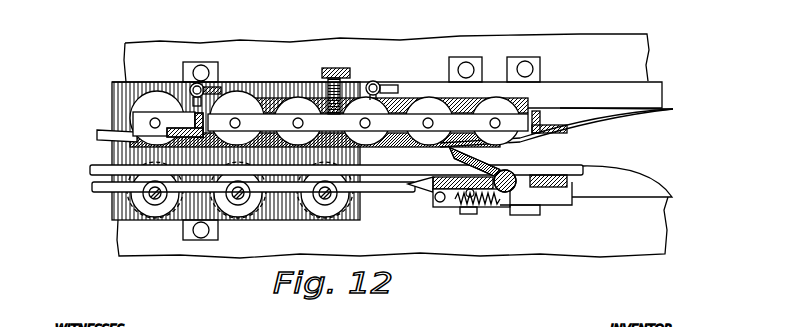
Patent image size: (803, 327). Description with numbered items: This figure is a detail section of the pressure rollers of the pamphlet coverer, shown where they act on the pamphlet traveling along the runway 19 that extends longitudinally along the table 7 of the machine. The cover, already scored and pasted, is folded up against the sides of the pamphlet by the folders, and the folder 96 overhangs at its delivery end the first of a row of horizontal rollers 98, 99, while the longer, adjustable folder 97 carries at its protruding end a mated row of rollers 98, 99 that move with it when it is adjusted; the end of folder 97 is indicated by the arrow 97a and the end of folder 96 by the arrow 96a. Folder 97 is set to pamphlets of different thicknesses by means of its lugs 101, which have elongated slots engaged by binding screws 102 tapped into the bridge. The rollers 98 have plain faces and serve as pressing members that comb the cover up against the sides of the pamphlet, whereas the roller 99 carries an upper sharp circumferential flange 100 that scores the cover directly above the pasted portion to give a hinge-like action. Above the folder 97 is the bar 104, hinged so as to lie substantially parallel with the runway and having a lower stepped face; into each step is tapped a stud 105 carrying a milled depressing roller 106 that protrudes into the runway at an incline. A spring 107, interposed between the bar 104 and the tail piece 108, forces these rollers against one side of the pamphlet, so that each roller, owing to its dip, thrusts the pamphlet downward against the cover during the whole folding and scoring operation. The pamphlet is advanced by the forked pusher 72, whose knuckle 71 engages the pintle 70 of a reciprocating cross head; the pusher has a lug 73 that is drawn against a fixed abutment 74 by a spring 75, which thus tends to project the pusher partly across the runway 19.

The table 7 is at (608, 243).
The runway 19 is at (570, 152).
The pintle 70 is at (505, 189).
The knuckle 71 is at (517, 188).
The pusher 72 is at (438, 181).
The lug 73 is at (497, 206).
The fixed abutment 74 is at (478, 211).
The spring 75 is at (450, 204).
The folder 96 is at (627, 187).
The arrow 96a is at (328, 200).
The folder 97 is at (620, 97).
The arrow 97a is at (122, 119).
The roller 98 is at (240, 93).
The roller 99 is at (150, 105).
The flange 100 is at (143, 220).
The lug 101 is at (190, 107).
The binding screw 102 is at (200, 95).
The bar 104 is at (343, 122).
The stud 105 is at (430, 118).
The depressing roller 106 is at (302, 100).
The spring 107 is at (325, 67).
The tail piece 108 is at (332, 70).